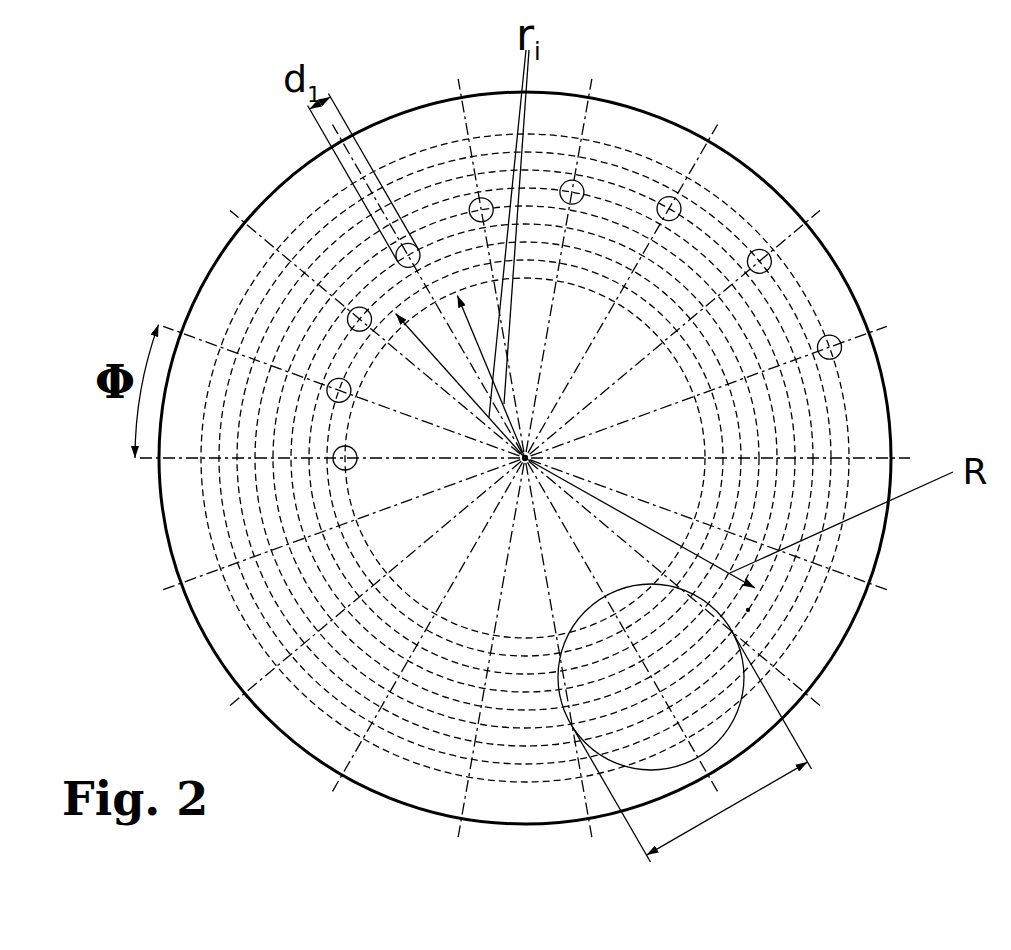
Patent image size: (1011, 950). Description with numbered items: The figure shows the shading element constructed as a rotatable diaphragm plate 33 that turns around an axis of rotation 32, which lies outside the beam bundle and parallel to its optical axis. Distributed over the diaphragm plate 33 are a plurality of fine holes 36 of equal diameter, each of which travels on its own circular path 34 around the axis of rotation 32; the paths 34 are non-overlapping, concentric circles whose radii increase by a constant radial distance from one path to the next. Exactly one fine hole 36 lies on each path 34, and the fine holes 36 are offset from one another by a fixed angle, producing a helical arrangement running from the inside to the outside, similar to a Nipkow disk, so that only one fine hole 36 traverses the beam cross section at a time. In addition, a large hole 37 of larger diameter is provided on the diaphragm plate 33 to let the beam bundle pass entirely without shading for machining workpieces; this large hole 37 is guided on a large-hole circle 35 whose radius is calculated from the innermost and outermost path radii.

The axis of rotation 32 is at (530, 456).
The rotatable diaphragm plate 33 is at (190, 224).
The paths 34 is at (468, 630).
The large-hole circle 35 is at (748, 610).
The fine holes 36 is at (835, 336).
The large hole 37 is at (740, 643).